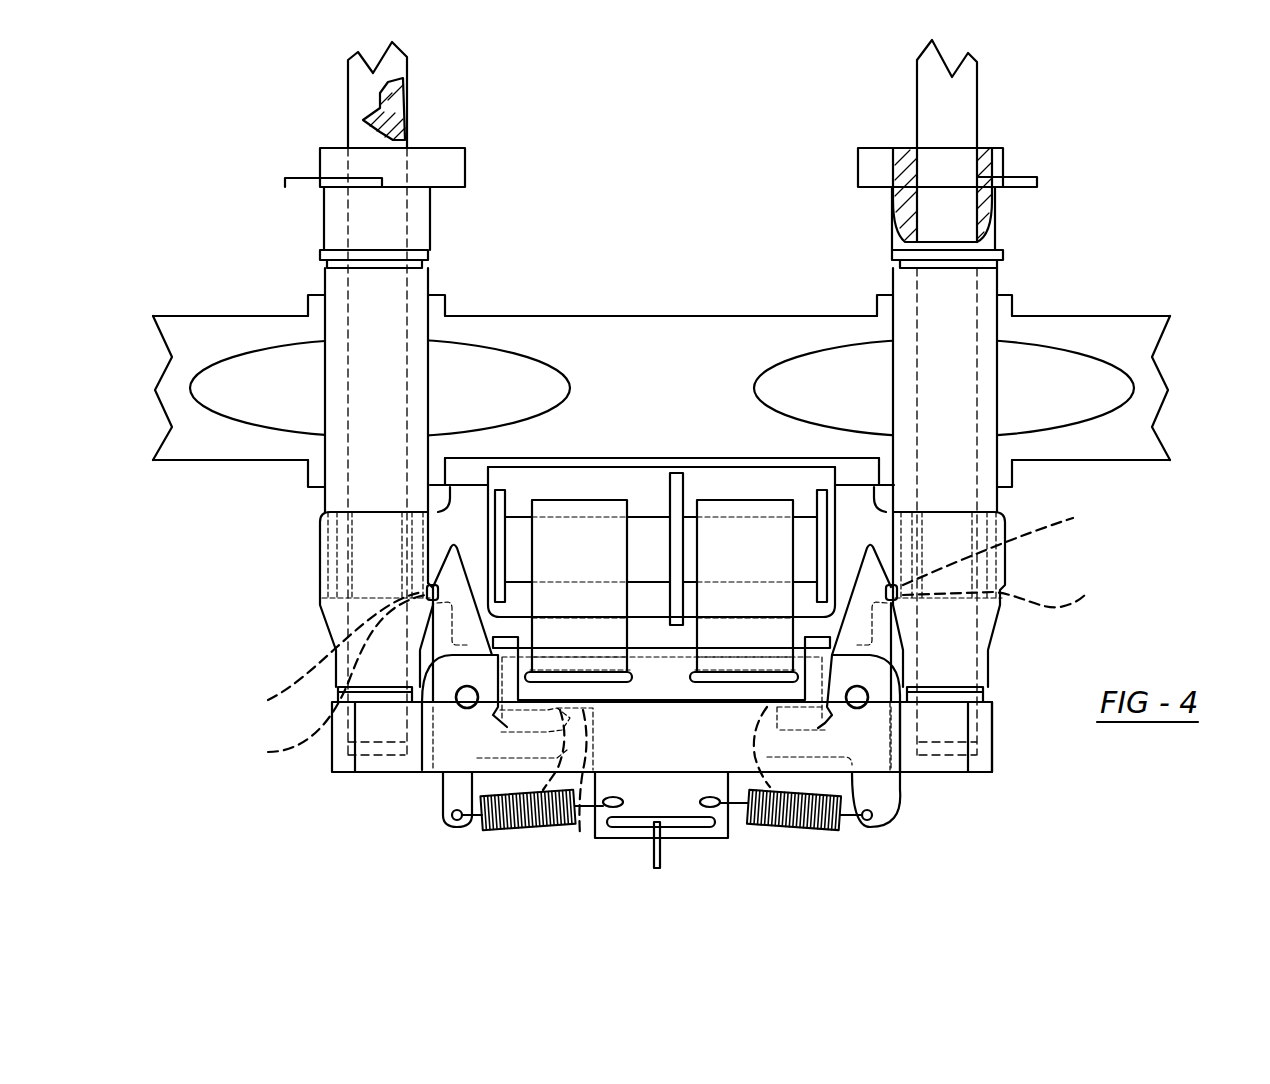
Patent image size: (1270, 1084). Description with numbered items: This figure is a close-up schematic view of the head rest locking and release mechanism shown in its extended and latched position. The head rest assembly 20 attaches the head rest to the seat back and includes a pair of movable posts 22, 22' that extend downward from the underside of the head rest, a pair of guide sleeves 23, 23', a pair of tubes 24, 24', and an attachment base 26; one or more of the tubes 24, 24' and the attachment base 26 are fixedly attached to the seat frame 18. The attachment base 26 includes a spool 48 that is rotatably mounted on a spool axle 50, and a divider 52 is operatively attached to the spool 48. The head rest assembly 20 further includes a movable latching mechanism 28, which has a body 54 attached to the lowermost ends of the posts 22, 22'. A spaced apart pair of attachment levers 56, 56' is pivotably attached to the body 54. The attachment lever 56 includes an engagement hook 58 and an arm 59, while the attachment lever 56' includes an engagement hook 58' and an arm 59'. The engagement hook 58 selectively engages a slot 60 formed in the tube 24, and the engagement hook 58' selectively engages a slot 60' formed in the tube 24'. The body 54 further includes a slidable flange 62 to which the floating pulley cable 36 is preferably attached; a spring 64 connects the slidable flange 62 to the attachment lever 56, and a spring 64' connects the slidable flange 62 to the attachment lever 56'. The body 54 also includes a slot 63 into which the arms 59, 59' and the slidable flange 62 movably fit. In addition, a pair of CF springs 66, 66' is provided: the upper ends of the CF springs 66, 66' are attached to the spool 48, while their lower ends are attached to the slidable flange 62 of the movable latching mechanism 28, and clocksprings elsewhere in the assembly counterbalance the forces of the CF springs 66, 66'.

The seat frame 18 is at (685, 333).
The head rest assembly 20 is at (1167, 199).
The movable post 22 is at (443, 398).
The movable post 22' is at (986, 397).
The guide sleeve 23 is at (352, 208).
The guide sleeve 23' is at (987, 208).
The tube 24 is at (349, 414).
The tube 24' is at (975, 427).
The attachment base 26 is at (447, 523).
The movable latching mechanism 28 is at (427, 757).
The floating pulley cable 36 is at (662, 854).
The spool 48 is at (657, 537).
The spool axle 50 is at (507, 540).
The divider 52 is at (673, 607).
The body 54 is at (897, 763).
The attachment lever 56 is at (490, 752).
The attachment lever 56' is at (881, 748).
The engagement hook 58 is at (329, 652).
The engagement hook 58' is at (1005, 544).
The arm 59 is at (551, 827).
The arm 59' is at (770, 825).
The slot 60 is at (330, 679).
The slot 60' is at (1009, 590).
The slidable flange 62 is at (657, 838).
The slot 63 is at (580, 785).
The spring 64 is at (481, 840).
The spring 64' is at (834, 838).
The CF spring 66 is at (573, 454).
The CF spring 66' is at (744, 454).